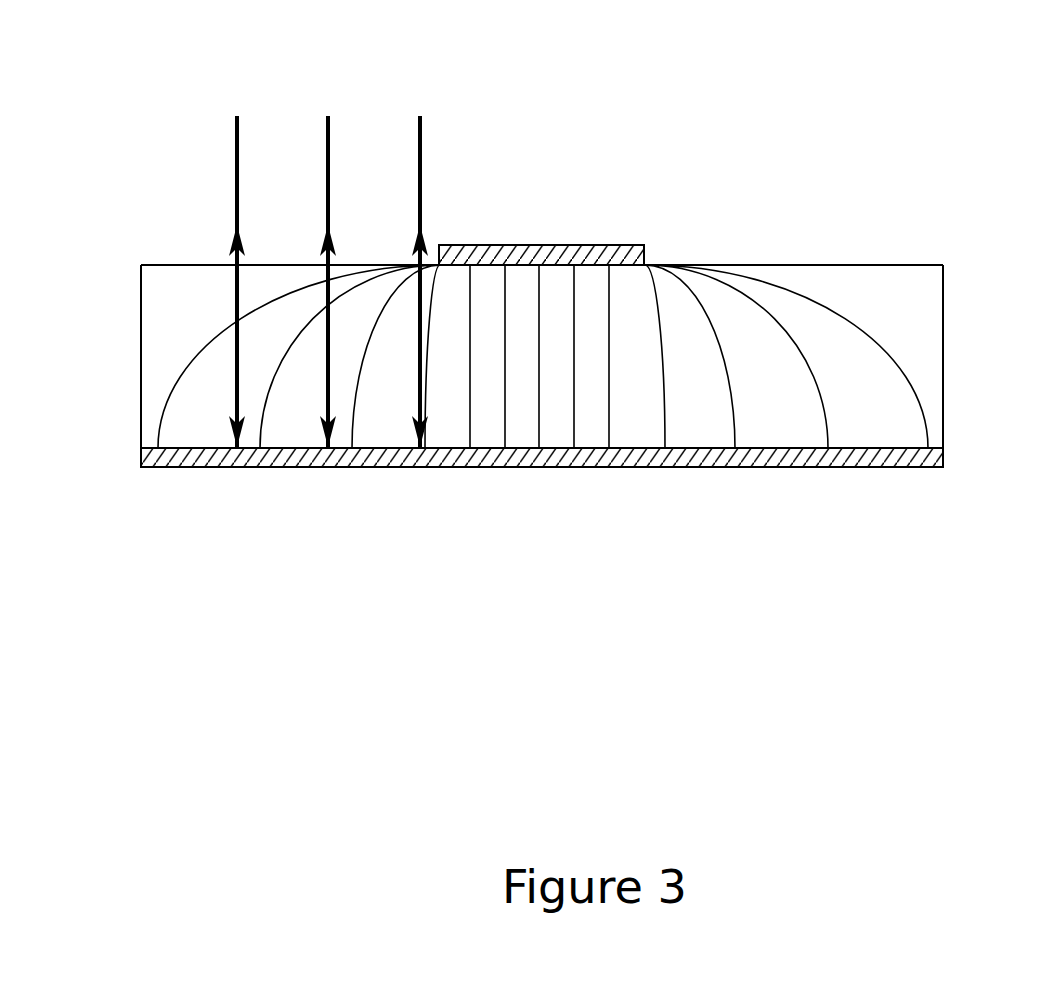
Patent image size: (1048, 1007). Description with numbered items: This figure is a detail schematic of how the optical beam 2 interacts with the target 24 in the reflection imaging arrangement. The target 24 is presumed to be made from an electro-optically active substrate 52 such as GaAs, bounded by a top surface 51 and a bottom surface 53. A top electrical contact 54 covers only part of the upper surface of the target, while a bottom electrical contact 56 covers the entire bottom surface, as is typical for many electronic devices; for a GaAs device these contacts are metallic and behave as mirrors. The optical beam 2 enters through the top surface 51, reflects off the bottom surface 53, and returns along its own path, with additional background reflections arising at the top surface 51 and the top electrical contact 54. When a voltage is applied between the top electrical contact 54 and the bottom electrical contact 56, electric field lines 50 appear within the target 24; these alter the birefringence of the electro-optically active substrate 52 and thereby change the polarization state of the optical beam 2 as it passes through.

The optical beam 2 is at (420, 110).
The target 24 is at (943, 405).
The electric field lines 50 is at (855, 317).
The top surface 51 is at (770, 262).
The electro-optically active substrate 52 is at (158, 323).
The bottom surface 53 is at (701, 467).
The top electrical contact 54 is at (592, 245).
The bottom electrical contact 56 is at (469, 467).